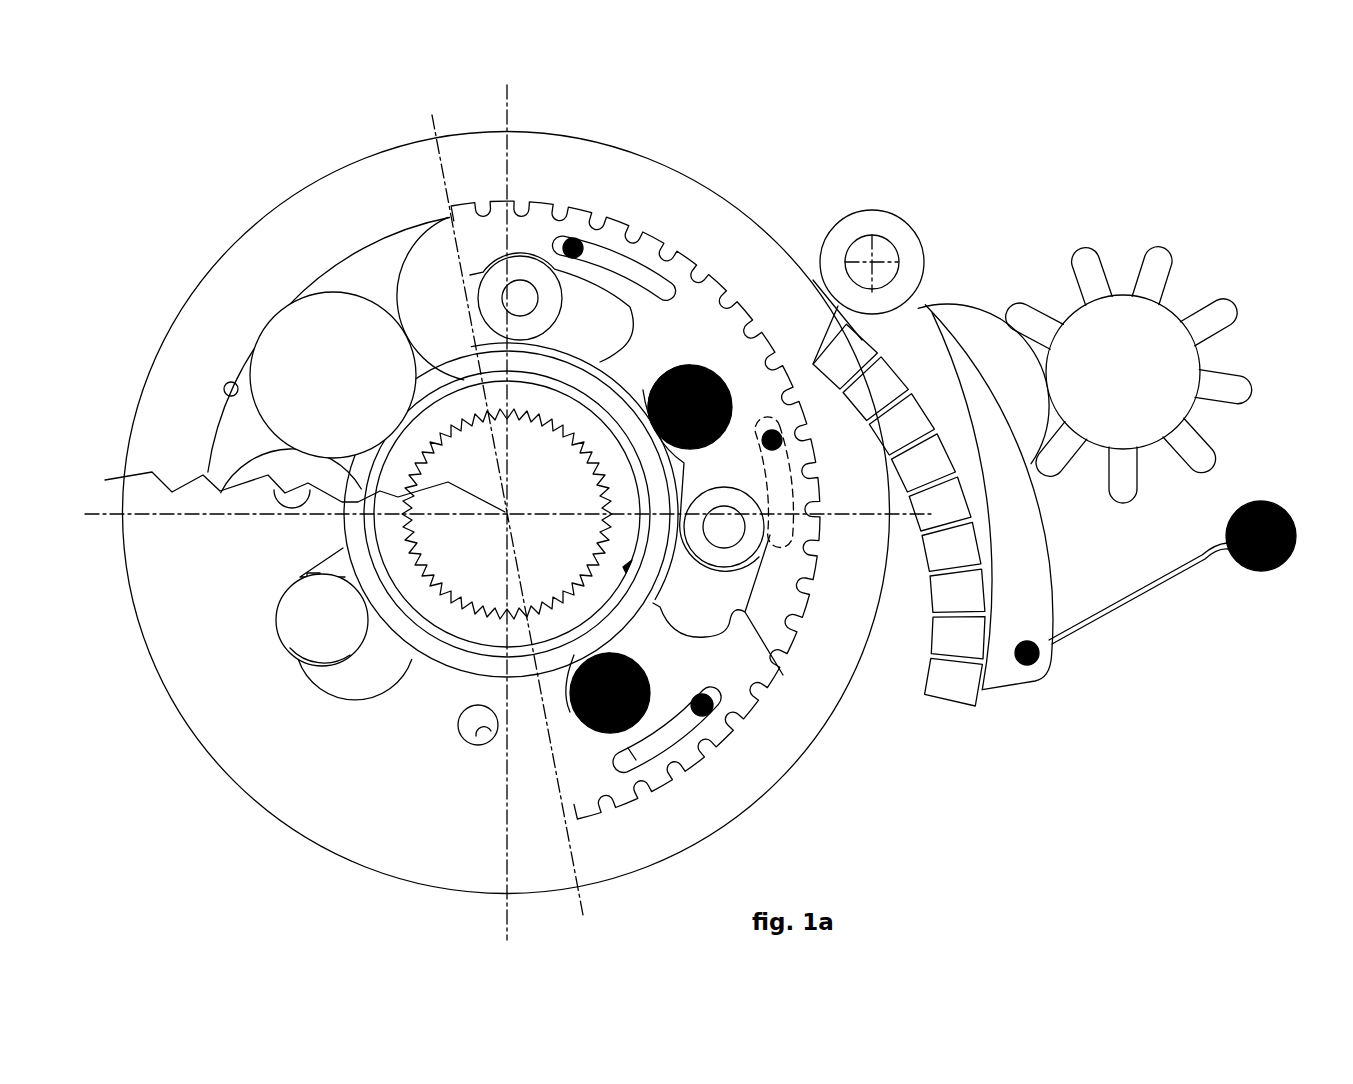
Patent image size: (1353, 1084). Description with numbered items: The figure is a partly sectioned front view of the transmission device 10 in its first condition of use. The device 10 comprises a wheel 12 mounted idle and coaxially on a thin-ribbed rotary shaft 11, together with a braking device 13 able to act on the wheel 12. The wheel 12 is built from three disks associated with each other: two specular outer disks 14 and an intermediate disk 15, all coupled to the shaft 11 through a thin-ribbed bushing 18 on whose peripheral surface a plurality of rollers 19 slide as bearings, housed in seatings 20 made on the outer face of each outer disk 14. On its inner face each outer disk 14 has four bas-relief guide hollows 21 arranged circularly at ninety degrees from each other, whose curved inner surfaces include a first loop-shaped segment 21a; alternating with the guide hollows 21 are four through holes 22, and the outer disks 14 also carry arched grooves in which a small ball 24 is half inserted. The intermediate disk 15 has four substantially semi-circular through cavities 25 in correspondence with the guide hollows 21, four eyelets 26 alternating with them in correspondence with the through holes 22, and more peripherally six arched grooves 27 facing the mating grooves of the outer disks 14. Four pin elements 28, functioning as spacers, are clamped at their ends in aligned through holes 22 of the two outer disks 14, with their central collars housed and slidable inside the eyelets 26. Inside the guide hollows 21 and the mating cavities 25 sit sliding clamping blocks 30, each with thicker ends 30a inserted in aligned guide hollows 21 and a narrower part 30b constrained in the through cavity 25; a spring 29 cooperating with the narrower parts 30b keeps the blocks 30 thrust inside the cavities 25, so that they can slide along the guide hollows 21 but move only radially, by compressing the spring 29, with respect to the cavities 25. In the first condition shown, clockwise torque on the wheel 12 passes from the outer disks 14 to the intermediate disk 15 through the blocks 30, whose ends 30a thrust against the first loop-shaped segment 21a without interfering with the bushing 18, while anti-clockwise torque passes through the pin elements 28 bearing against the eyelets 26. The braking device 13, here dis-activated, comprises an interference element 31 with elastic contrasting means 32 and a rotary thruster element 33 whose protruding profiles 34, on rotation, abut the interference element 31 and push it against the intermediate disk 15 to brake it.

The transmission device 10 is at (760, 120).
The rotary shaft 11 is at (447, 460).
The wheel 12 is at (612, 138).
The braking device 13 is at (1123, 222).
The outer disk 14 is at (243, 783).
The intermediate disk 15 is at (685, 288).
The thin-ribbed bushing 18 is at (487, 635).
The rollers 19 is at (420, 247).
The seatings 20 is at (232, 387).
The guide hollows 21 is at (353, 697).
The first loop-shaped segment 21a is at (297, 580).
The through holes 22 is at (482, 735).
The small ball 24 is at (575, 242).
The through cavities 25 is at (652, 383).
The eyelets 26 is at (598, 300).
The arched grooves 27 is at (657, 743).
The pin elements 28 is at (508, 260).
The spring 29 is at (675, 565).
The sliding clamping blocks 30 is at (722, 380).
The ends 30a is at (323, 660).
The narrower part 30b is at (650, 423).
The interference element 31 is at (919, 313).
The elastic contrasting means 32 is at (1109, 630).
The thruster element 33 is at (1199, 367).
The protruding profiles 34 is at (1030, 313).